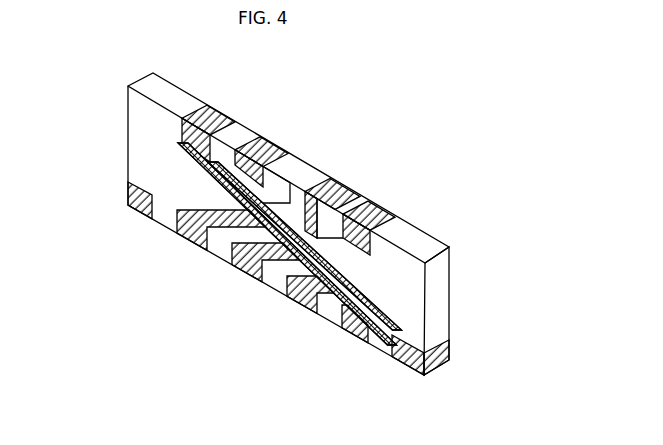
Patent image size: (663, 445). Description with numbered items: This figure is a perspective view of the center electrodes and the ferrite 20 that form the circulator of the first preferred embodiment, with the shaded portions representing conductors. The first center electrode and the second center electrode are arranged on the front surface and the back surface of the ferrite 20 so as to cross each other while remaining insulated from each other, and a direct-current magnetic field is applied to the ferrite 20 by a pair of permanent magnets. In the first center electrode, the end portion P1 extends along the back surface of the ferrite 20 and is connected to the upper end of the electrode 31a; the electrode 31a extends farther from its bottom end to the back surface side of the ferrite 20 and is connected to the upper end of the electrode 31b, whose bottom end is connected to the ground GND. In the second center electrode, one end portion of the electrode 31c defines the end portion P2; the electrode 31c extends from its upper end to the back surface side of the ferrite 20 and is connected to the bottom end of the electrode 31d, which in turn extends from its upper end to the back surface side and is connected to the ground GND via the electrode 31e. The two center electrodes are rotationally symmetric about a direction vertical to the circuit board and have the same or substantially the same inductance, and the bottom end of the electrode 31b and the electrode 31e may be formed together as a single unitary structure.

The ferrite 20 is at (128, 123).
The end portion of the first center electrode P1 is at (128, 194).
The end portion of the second center electrode P2 is at (407, 362).
The electrode 31a is at (215, 228).
The electrode 31b is at (272, 262).
The electrode 31c is at (393, 318).
The electrode 31d is at (332, 294).
The electrode 31e is at (300, 305).
The ground GND is at (241, 270).